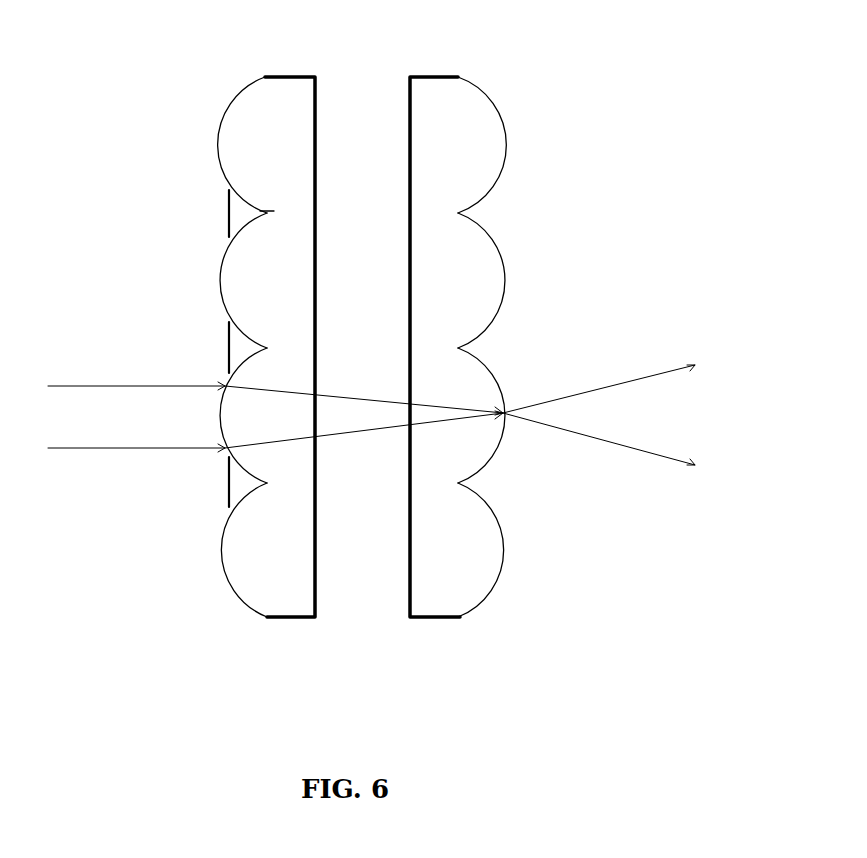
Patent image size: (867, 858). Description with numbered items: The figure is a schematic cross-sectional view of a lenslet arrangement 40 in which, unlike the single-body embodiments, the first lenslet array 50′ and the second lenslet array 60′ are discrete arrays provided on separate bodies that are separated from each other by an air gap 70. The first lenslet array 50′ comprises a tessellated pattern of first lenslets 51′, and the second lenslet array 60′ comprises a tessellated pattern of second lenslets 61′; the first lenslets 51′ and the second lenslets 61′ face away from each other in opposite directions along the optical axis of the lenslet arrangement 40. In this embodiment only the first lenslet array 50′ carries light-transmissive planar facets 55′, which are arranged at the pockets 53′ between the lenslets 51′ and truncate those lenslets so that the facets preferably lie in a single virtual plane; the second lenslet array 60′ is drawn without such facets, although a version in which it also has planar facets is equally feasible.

The lenslet arrangement 40 is at (225, 55).
The first lenslet array 50′ is at (220, 133).
The first lenslets 51′ is at (247, 290).
The pockets 53′ is at (267, 212).
The planar facets 55′ is at (228, 208).
The second lenslet array 60′ is at (507, 135).
The second lenslets 61′ is at (498, 282).
The air gap 70 is at (363, 600).